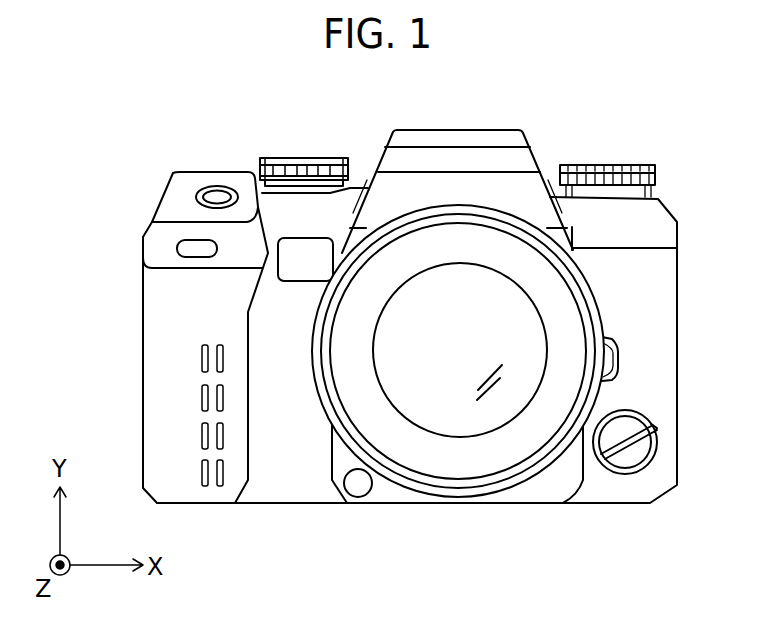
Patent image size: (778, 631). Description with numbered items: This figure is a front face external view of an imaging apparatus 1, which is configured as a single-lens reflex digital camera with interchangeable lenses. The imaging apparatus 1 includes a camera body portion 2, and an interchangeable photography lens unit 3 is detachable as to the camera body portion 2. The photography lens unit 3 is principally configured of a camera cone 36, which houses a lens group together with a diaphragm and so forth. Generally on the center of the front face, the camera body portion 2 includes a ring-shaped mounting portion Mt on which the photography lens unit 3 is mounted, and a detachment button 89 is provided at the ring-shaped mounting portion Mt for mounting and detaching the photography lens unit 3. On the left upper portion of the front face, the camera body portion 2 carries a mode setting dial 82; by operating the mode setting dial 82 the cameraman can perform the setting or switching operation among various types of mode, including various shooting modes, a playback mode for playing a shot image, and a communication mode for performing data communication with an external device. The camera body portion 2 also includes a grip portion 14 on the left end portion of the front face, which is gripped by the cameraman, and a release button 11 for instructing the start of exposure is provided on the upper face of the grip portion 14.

The imaging apparatus 1 is at (631, 91).
The camera body portion 2 is at (677, 318).
The photography lens unit 3 is at (473, 467).
The release button 11 is at (215, 194).
The grip portion 14 is at (143, 350).
The camera cone 36 is at (590, 280).
The mode setting dial 82 is at (301, 158).
The detachment button 89 is at (617, 362).
The ring-shaped mounting portion Mt is at (315, 375).